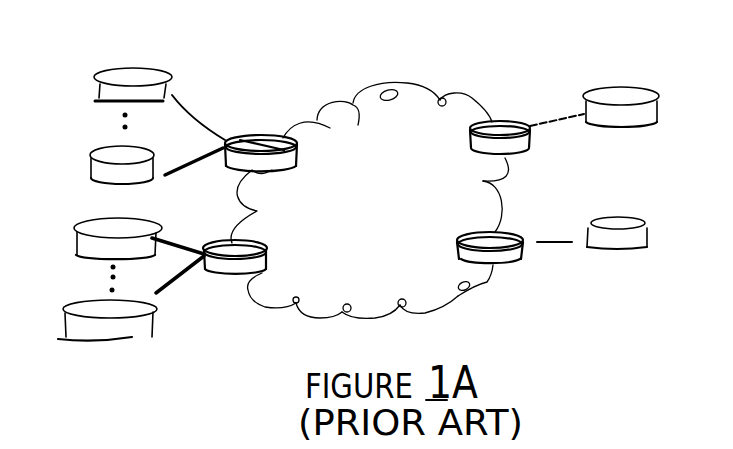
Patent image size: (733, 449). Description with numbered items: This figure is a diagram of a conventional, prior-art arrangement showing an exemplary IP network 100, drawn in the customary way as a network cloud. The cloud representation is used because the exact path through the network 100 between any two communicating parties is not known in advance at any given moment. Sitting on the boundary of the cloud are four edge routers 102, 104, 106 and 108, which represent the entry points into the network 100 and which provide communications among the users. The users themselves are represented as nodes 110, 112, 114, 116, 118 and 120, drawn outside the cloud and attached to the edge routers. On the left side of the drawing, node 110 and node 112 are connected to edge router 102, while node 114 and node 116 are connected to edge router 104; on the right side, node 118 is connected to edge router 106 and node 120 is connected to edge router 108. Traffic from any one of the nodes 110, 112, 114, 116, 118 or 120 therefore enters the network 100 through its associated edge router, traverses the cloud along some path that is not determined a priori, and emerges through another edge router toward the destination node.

The network 100 is at (411, 47).
The edge router 102 is at (265, 129).
The edge router 104 is at (222, 276).
The edge router 106 is at (512, 118).
The edge router 108 is at (500, 273).
The node 110 is at (131, 63).
The node 112 is at (84, 163).
The node 114 is at (70, 245).
The node 116 is at (62, 337).
The node 118 is at (631, 93).
The node 120 is at (618, 210).